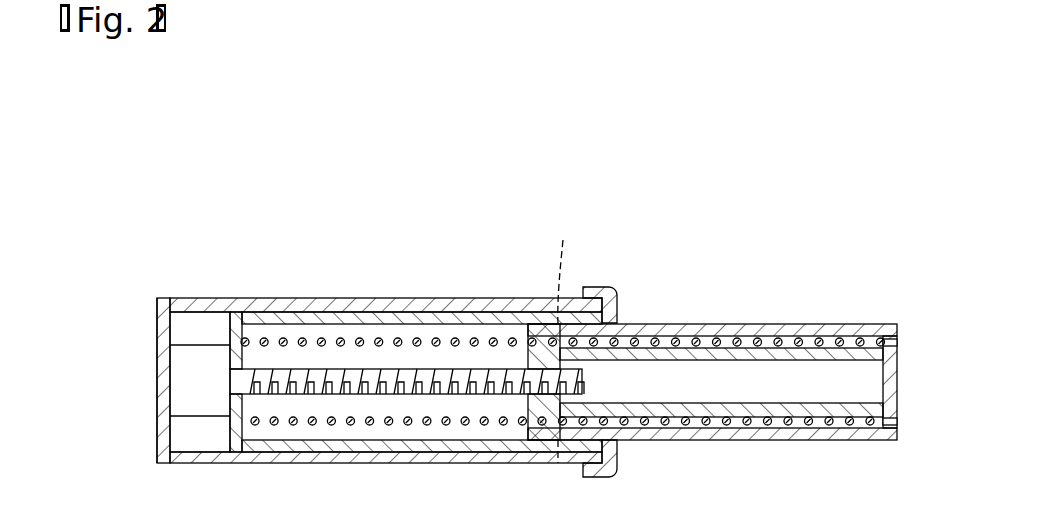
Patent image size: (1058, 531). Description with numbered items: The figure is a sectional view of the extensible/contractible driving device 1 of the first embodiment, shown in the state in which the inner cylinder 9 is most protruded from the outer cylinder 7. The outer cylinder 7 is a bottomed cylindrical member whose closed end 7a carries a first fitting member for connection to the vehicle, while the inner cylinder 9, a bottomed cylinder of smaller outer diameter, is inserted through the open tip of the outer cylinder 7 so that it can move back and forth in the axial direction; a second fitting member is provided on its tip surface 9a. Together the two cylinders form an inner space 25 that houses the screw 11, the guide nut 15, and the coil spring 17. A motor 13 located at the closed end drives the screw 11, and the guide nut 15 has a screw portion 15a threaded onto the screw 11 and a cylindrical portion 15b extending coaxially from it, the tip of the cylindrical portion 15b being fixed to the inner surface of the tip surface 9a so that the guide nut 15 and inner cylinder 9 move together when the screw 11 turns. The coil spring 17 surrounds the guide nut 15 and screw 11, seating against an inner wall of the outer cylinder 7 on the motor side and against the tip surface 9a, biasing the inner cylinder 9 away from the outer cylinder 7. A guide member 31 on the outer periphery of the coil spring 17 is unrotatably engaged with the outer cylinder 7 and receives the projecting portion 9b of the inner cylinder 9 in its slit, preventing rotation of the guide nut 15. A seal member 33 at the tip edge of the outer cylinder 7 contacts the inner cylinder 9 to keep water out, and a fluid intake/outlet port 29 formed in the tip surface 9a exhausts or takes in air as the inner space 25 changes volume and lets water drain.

The extensible/contractible driving device 1 is at (452, 214).
The outer cylinder 7 is at (427, 298).
The closed end 7a is at (170, 336).
The inner cylinder 9 is at (785, 326).
The tip surface 9a is at (898, 381).
The projecting portion 9b is at (560, 335).
The screw 11 is at (400, 368).
The motor 13 is at (196, 370).
The guide nut 15 is at (706, 338).
The screw portion 15a is at (548, 358).
The cylindrical portion 15b is at (828, 356).
The coil spring 17 is at (352, 338).
The inner space 25 is at (500, 326).
The fluid intake/outlet port 29 is at (911, 344).
The guide member 31 is at (288, 320).
The seal member 33 is at (605, 290).